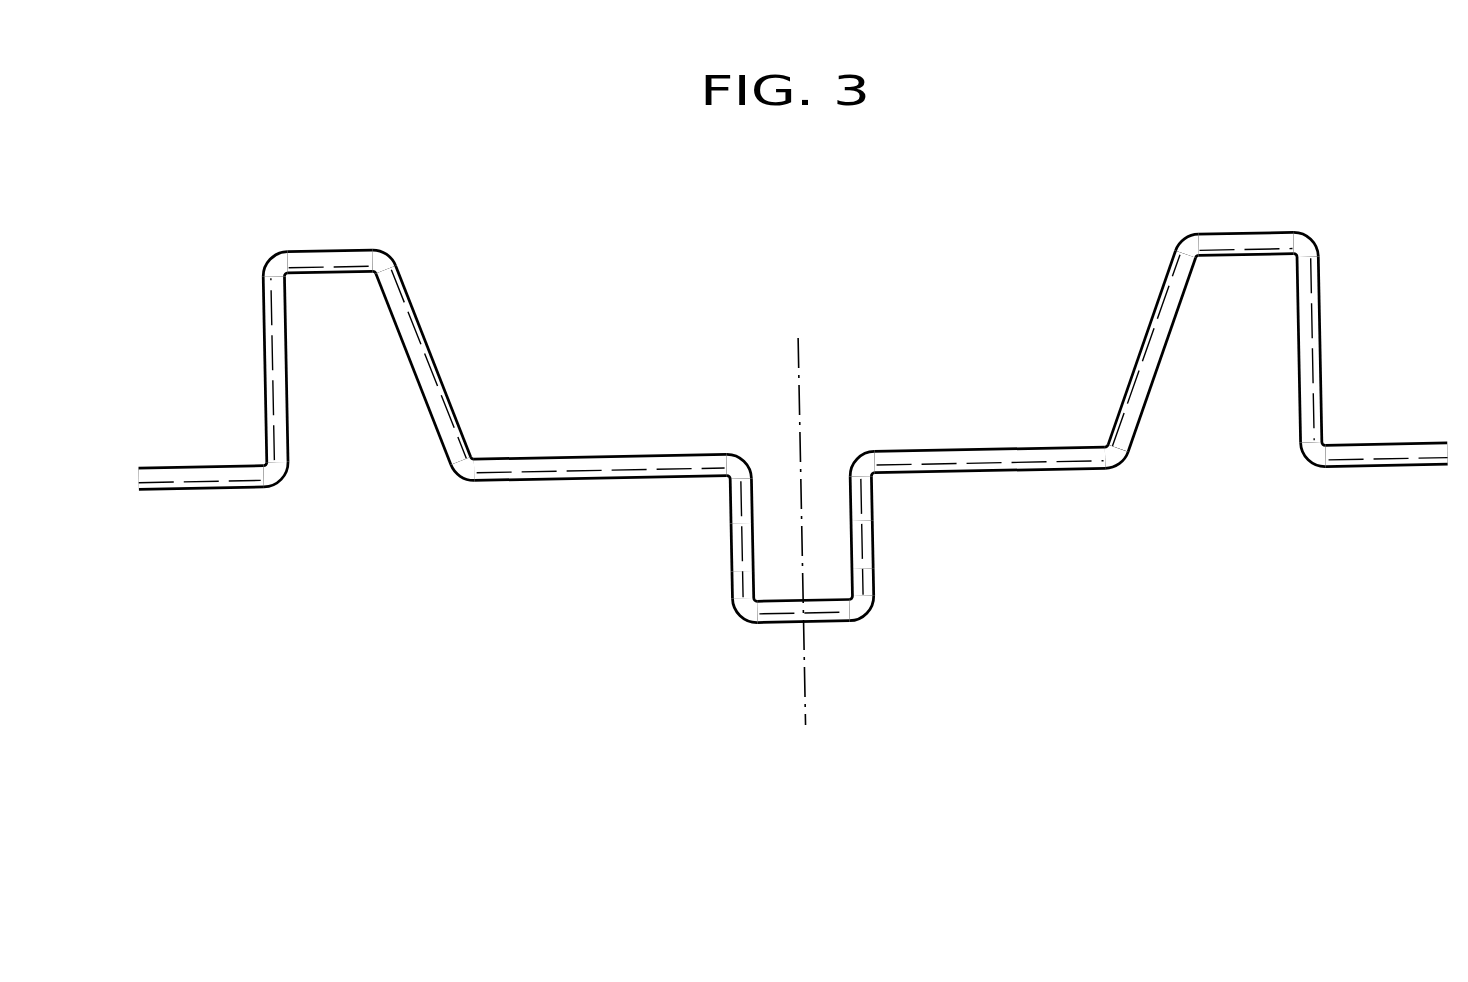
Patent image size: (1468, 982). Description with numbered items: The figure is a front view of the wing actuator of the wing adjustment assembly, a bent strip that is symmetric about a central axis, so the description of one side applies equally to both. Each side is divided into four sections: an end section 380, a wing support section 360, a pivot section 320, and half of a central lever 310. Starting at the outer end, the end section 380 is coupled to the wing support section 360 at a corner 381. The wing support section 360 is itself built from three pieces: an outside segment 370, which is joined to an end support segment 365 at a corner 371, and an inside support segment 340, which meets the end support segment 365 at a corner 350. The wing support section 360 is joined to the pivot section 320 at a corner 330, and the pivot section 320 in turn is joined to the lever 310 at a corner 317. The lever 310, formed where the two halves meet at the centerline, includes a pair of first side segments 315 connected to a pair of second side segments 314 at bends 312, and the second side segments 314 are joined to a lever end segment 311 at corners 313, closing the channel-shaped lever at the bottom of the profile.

The lever 310 is at (836, 636).
The lever end segment 311 is at (770, 626).
The bend 312 is at (733, 546).
The corner 313 is at (732, 620).
The second side segment 314 is at (734, 584).
The first side segment 315 is at (729, 510).
The corner 317 is at (741, 455).
The pivot section 320 is at (626, 449).
The corner 330 is at (461, 481).
The inside support segment 340 is at (437, 359).
The corner 350 is at (398, 249).
The wing support section 360 is at (352, 247).
The end support segment 365 is at (337, 277).
The outside segment 370 is at (266, 356).
The corner 371 is at (258, 249).
The end section 380 is at (206, 500).
The corner 381 is at (277, 491).